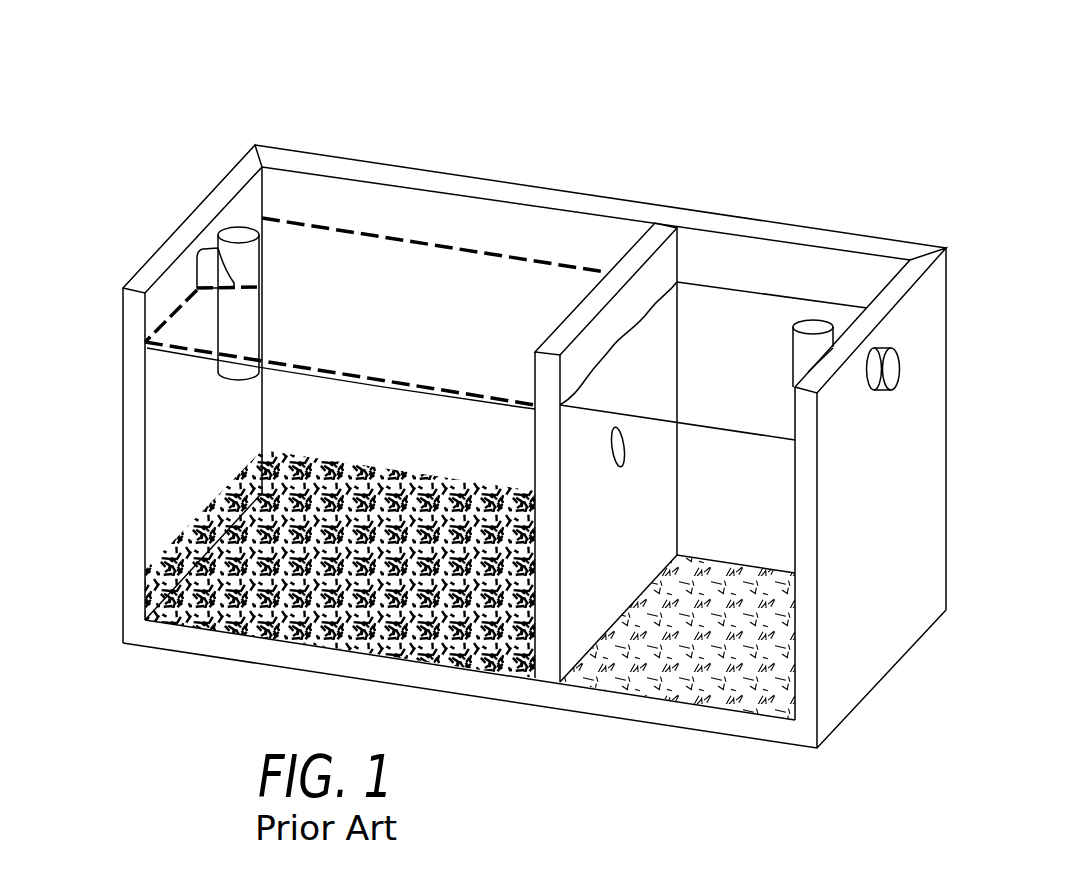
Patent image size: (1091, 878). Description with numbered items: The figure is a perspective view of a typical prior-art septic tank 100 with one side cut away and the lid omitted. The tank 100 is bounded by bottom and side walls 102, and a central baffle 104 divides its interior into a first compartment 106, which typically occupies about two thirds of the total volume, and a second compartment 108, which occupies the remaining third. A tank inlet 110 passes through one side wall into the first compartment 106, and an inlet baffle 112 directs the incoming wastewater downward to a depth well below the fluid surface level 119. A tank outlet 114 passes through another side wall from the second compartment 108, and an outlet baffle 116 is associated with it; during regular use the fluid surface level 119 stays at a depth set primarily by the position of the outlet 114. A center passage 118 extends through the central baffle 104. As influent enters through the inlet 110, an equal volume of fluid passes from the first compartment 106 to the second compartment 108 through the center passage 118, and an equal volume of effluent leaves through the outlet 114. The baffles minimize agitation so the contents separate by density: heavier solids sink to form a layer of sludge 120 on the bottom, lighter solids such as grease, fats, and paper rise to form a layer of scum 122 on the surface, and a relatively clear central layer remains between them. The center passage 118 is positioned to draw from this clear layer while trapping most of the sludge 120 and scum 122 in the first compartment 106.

The septic tank 100 is at (877, 62).
The bottom and side walls 102 is at (600, 203).
The central baffle 104 is at (568, 332).
The first compartment 106 is at (457, 207).
The second compartment 108 is at (778, 258).
The tank inlet 110 is at (207, 258).
The inlet baffle 112 is at (258, 272).
The tank outlet 114 is at (877, 390).
The outlet baffle 116 is at (798, 350).
The center passage 118 is at (618, 468).
The fluid surface level 119 is at (143, 343).
The layer of sludge 120 is at (207, 498).
The layer of scum 122 is at (325, 386).